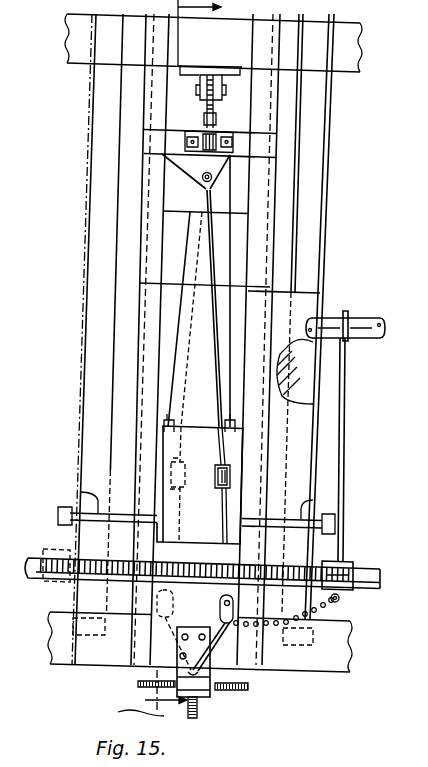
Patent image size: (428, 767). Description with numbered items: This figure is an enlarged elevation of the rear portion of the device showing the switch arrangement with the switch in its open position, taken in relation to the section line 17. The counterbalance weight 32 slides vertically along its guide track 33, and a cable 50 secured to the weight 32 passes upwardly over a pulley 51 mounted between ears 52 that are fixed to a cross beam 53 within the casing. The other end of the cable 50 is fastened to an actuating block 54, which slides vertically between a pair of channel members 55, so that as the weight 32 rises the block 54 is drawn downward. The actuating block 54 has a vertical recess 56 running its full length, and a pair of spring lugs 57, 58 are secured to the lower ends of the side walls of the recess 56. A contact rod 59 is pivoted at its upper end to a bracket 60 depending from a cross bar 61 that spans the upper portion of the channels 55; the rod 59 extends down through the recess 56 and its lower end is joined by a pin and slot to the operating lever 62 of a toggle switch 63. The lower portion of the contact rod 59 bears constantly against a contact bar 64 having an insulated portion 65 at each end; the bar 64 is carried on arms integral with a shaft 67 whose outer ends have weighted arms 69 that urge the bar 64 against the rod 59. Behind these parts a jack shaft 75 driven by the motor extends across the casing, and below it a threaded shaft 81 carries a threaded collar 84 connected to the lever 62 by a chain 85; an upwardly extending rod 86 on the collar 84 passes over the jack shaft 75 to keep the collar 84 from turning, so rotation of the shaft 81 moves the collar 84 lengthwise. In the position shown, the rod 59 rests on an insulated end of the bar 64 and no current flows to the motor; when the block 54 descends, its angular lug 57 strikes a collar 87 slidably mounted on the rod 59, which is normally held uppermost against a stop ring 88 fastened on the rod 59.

The section line 17 is at (182, 358).
The counterbalance weight 32 is at (305, 303).
The guide track 33 is at (103, 143).
The cable 50 is at (212, 121).
The pulley 51 is at (206, 118).
The ears 52 is at (237, 59).
The cross beam 53 is at (352, 50).
The actuating block 54 is at (243, 237).
The channel members 55 is at (158, 183).
The vertical recess 56 is at (187, 245).
The spring lug 57 is at (218, 440).
The spring lug 58 is at (184, 415).
The contact rod 59 is at (232, 502).
The bracket 60 is at (199, 174).
The cross bar 61 is at (258, 143).
The operating lever 62 is at (238, 647).
The toggle switch 63 is at (211, 687).
The contact bar 64 is at (215, 540).
The insulated portion 65 is at (182, 504).
The shaft 67 is at (80, 492).
The weighted arm 69 is at (57, 516).
The jack shaft 75 is at (362, 326).
The threaded shaft 81 is at (372, 573).
The collar 84 is at (347, 562).
The chain 85 is at (347, 633).
The rod 86 is at (347, 362).
The collar 87 is at (232, 478).
The stop ring 88 is at (232, 463).